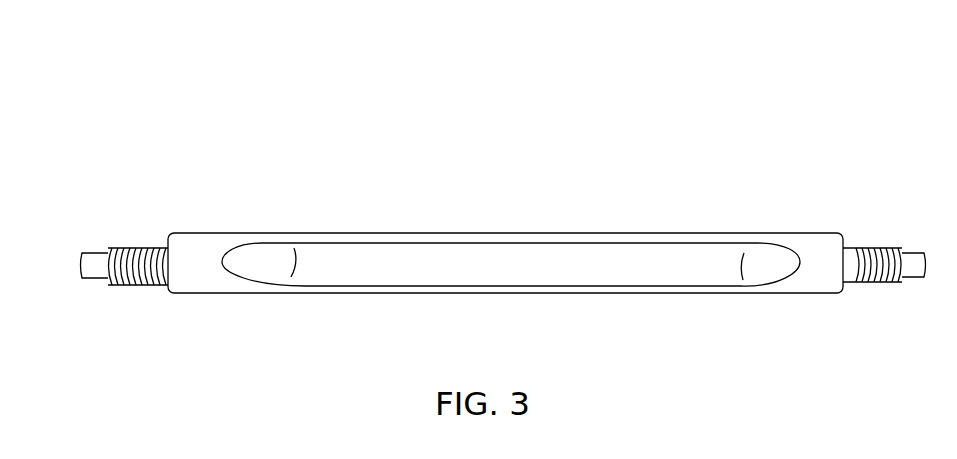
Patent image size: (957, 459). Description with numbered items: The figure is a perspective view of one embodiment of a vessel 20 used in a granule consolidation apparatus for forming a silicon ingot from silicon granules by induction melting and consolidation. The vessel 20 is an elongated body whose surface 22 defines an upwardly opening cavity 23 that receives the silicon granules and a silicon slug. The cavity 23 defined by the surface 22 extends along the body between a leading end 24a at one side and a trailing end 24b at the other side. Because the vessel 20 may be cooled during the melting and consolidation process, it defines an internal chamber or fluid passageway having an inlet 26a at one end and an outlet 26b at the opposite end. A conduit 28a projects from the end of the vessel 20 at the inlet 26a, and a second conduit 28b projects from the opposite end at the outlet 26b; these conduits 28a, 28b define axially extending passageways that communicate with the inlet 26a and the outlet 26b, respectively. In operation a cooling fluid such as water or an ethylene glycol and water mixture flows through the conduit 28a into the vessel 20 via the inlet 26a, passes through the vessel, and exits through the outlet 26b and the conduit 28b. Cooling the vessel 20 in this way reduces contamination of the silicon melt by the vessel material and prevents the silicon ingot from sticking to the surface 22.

The vessel 20 is at (463, 103).
The surface 22 is at (362, 280).
The cavity 23 is at (455, 280).
The leading end 24a is at (247, 252).
The trailing end 24b is at (778, 252).
The inlet 26a is at (165, 247).
The outlet 26b is at (847, 247).
The conduit 28a is at (93, 280).
The conduit 28b is at (910, 280).